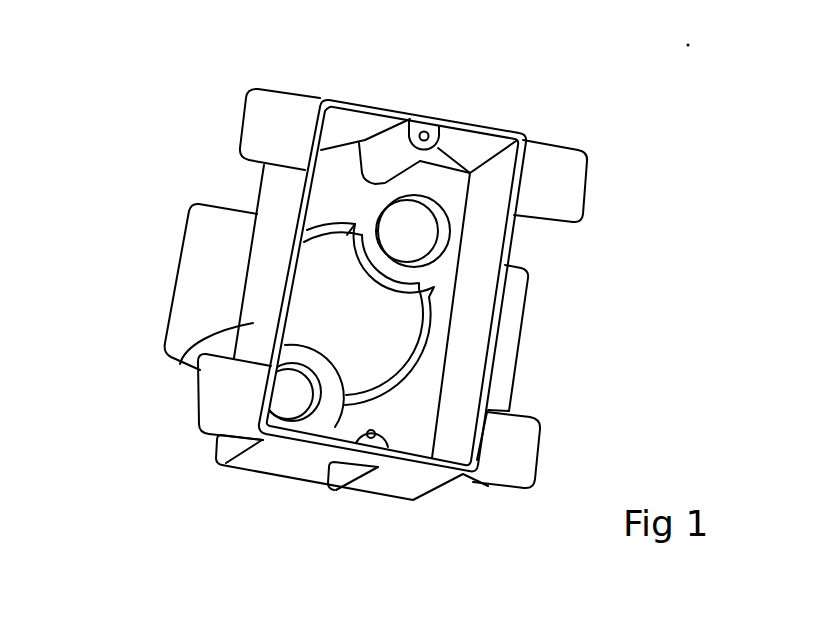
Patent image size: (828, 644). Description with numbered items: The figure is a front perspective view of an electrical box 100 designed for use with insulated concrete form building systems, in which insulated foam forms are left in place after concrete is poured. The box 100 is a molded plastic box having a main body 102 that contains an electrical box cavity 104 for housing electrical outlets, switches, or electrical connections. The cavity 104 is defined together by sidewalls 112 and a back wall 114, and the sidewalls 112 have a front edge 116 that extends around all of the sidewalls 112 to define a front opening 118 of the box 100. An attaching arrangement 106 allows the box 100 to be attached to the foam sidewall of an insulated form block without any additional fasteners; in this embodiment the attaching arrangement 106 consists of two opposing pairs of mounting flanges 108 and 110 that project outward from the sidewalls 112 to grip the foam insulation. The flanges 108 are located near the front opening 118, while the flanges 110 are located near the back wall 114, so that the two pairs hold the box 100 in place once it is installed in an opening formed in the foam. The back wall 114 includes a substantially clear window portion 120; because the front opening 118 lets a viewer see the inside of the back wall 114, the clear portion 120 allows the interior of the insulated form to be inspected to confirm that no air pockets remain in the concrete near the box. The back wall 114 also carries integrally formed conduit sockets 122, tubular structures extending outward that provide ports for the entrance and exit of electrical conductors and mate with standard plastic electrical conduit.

The electrical box 100 is at (366, 50).
The main body 102 is at (368, 108).
The electrical box cavity 104 is at (406, 447).
The attaching arrangement 106 is at (135, 358).
The mounting flanges 108 is at (277, 100).
The mounting flanges 110 is at (205, 217).
The sidewalls 112 is at (524, 134).
The back wall 114 is at (505, 172).
The front edge 116 is at (285, 440).
The front opening 118 is at (443, 442).
The window portion 120 is at (387, 333).
The conduit sockets 122 is at (476, 124).